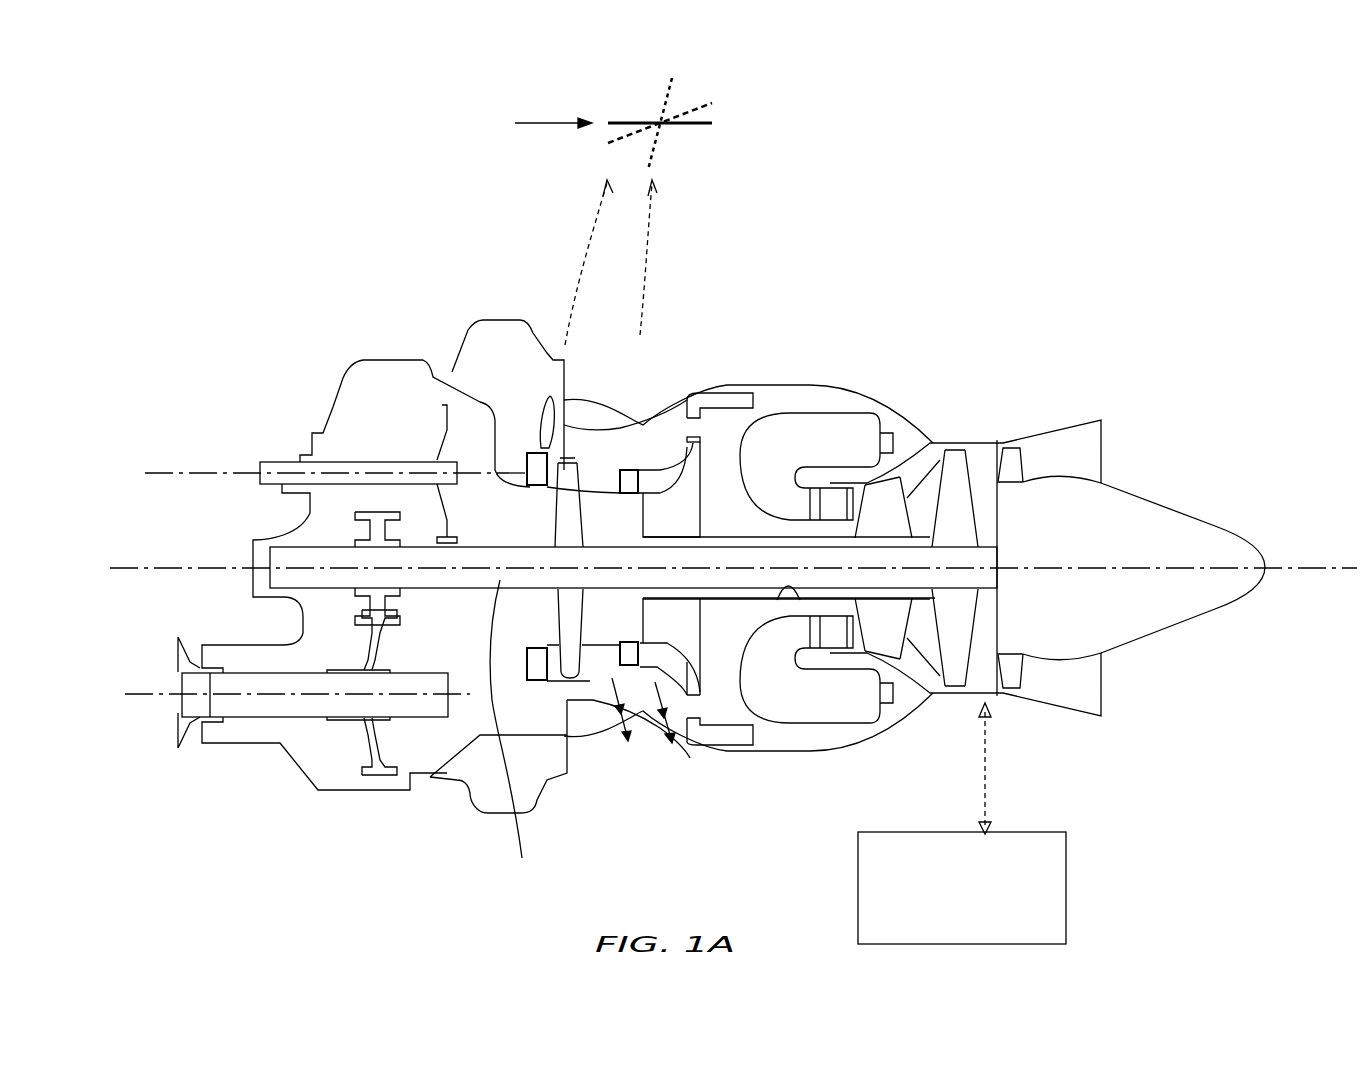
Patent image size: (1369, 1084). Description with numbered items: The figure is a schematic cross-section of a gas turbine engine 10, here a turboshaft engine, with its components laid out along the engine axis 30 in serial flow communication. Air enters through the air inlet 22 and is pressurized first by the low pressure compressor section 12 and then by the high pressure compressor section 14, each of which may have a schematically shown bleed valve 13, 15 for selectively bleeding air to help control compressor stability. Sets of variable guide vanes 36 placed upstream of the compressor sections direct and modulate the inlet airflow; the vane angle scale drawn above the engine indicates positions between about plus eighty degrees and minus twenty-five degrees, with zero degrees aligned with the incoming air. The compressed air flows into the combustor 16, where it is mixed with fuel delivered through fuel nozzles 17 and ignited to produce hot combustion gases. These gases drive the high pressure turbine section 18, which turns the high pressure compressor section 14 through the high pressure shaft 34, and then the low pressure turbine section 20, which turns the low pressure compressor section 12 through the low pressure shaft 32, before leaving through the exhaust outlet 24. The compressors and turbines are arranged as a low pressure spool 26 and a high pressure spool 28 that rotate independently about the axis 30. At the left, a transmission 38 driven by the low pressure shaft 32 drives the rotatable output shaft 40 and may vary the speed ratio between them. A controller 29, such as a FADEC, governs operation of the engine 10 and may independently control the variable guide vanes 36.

The gas turbine engine 10 is at (1063, 344).
The low pressure compressor section 12 is at (537, 453).
The bleed valve 13 is at (616, 742).
The high pressure compressor section 14 is at (683, 495).
The bleed valve 15 is at (674, 745).
The combustor 16 is at (830, 445).
The fuel nozzles 17 is at (893, 440).
The high pressure turbine section 18 is at (880, 626).
The low pressure turbine section 20 is at (955, 468).
The air inlet 22 is at (474, 798).
The exhaust outlet 24 is at (1082, 692).
The low pressure spool 26 is at (592, 590).
The high pressure spool 28 is at (717, 600).
The controller 29 is at (1068, 852).
The engine axis 30 is at (1330, 567).
The low pressure shaft 32 is at (509, 732).
The high pressure shaft 34 is at (797, 605).
The variable guide vanes 36 is at (527, 455).
The transmission 38 is at (340, 613).
The output shaft 40 is at (248, 700).